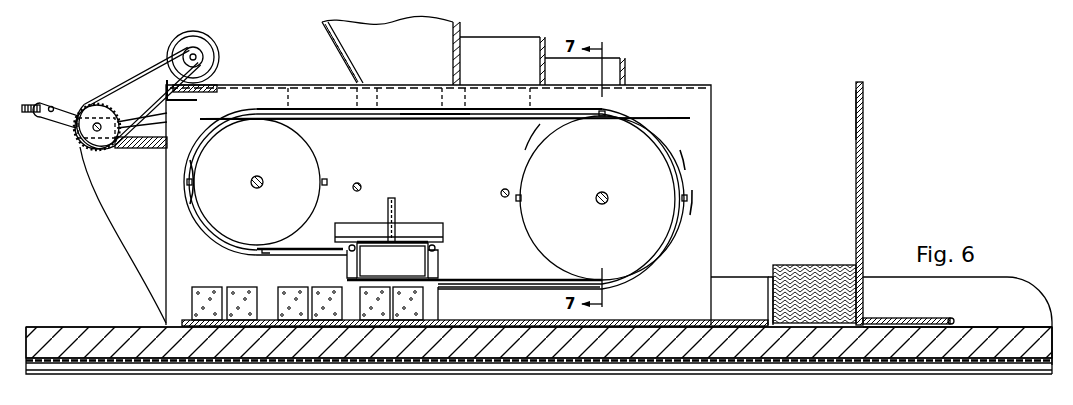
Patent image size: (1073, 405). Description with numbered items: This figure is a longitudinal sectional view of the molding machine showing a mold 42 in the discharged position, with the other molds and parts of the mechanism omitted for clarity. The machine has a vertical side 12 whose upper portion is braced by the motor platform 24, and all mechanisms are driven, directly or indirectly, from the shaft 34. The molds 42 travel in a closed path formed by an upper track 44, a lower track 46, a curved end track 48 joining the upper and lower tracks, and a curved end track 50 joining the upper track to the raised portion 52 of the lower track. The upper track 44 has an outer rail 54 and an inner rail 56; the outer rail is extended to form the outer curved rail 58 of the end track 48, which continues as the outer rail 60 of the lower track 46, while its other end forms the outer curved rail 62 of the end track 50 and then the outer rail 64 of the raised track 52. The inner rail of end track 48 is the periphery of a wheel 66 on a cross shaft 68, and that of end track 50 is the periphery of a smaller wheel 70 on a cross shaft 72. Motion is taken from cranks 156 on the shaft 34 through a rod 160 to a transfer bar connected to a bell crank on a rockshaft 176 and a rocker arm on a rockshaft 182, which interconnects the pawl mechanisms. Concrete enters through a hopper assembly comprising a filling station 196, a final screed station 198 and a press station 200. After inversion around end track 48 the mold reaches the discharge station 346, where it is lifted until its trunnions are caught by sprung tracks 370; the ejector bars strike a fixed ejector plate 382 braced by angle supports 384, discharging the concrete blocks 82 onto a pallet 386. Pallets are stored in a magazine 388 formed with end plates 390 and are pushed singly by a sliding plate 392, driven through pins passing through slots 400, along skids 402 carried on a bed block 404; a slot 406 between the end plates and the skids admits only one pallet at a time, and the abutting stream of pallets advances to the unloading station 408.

The vertical side 12 is at (684, 84).
The platform 24 is at (204, 89).
The shaft 34 is at (94, 129).
The mold 42 is at (436, 260).
The upper track 44 is at (437, 123).
The lower track 46 is at (483, 277).
The curved end track 48 is at (674, 138).
The curved end track 50 is at (181, 193).
The raised portion of the lower track 52 is at (306, 258).
The outer rail 54 is at (341, 110).
The inner rail 56 is at (356, 121).
The outer curved rail 58 is at (694, 185).
The outer rail 60 is at (519, 300).
The outer curved rail 62 is at (204, 136).
The outer rail 64 is at (327, 256).
The wheel 66 is at (556, 152).
The cross shaft 68 is at (606, 194).
The wheel 70 is at (298, 156).
The cross shaft 72 is at (252, 178).
The concrete building block 82 is at (212, 283).
The crank 156 is at (57, 106).
The rod 160 is at (157, 117).
The rockshaft 176 is at (361, 184).
The rockshaft 182 is at (501, 190).
The filling station 196 is at (383, 66).
The final screed station 198 is at (477, 64).
The press station 200 is at (609, 69).
The discharge station 346 is at (440, 300).
The sprung track 370 is at (415, 269).
The ejector plate 382 is at (401, 238).
The angle support 384 is at (388, 206).
The pallet 386 is at (640, 320).
The magazine 388 is at (845, 133).
The end plate 390 is at (857, 113).
The sliding plate 392 is at (892, 318).
The slot 400 is at (938, 318).
The skid 402 is at (1007, 327).
The bed block 404 is at (977, 335).
The slot 406 is at (766, 321).
The unloading station 408 is at (103, 326).